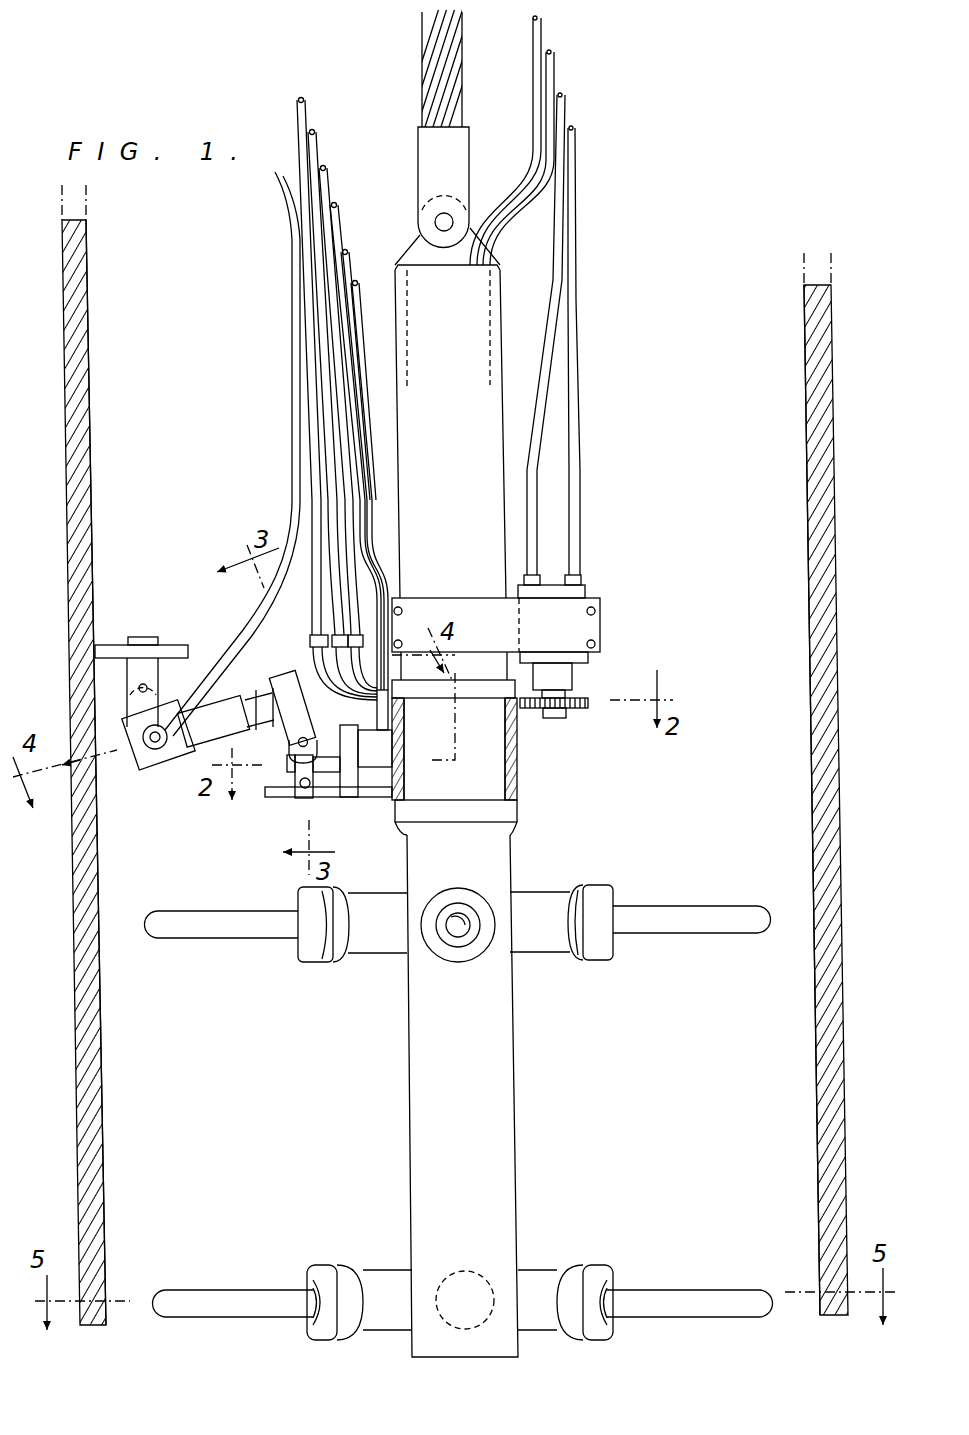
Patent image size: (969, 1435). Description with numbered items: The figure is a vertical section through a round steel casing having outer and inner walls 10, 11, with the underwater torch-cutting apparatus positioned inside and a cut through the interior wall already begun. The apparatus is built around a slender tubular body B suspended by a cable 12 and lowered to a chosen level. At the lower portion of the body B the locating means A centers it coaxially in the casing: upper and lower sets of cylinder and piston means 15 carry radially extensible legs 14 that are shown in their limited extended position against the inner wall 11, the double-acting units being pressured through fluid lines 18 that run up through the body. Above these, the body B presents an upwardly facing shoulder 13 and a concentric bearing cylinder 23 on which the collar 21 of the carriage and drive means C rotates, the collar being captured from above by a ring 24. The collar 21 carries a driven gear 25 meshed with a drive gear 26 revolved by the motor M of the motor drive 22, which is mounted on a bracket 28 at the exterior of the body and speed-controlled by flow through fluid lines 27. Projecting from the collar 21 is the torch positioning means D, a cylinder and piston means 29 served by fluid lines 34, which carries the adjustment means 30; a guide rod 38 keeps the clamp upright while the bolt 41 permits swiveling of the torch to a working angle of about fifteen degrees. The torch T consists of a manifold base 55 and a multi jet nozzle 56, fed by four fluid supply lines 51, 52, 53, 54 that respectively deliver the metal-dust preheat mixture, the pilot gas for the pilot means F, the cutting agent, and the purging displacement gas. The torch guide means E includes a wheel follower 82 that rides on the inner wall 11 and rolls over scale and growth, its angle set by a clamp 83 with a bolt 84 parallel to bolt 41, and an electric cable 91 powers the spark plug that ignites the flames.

The outer wall 10 is at (73, 1110).
The inner wall 11 is at (101, 1122).
The cable 12 is at (445, 63).
The shoulder 13 is at (518, 804).
The positionable legs 14 is at (182, 935).
The cylinder and piston means 15 is at (373, 942).
The fluid lines 18 is at (552, 54).
The collar 21 is at (518, 756).
The motor drive 22 is at (560, 624).
The bearing cylinder 23 is at (478, 786).
The ring 24 is at (428, 694).
The driven gear 25 is at (532, 692).
The drive gear 26 is at (580, 713).
The fluid lines 27 is at (576, 130).
The bracket 28 is at (440, 608).
The cylinder and piston means 29 is at (358, 775).
The adjustment means 30 is at (278, 775).
The fluid lines 34 is at (360, 278).
The guide rod 38 is at (292, 792).
The bolt 41 is at (297, 742).
The fluid supply line 51 is at (340, 205).
The fluid supply line 52 is at (318, 132).
The fluid supply line 53 is at (329, 168).
The fluid supply line 54 is at (307, 100).
The manifold base 55 is at (286, 664).
The multi jet nozzle 56 is at (245, 700).
The follower 82 is at (105, 640).
The clamp 83 is at (126, 672).
The bolt 84 is at (138, 690).
The electric cable 91 is at (278, 198).
The locating means A is at (570, 883).
The body B is at (494, 1088).
The carriage and drive means C is at (618, 656).
The torch positioning means D is at (380, 780).
The torch guide means E is at (146, 632).
The pilot means F is at (170, 757).
The motor M is at (594, 580).
The torch T is at (203, 627).